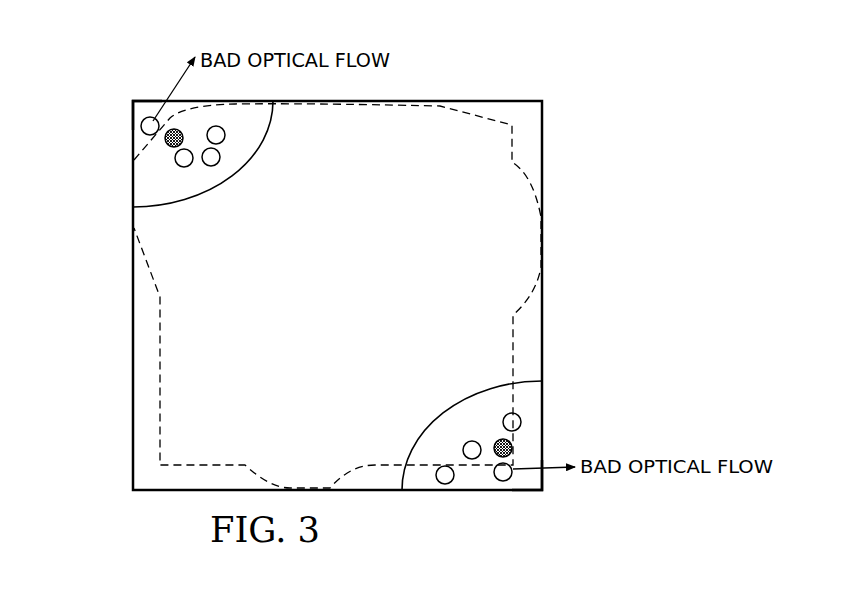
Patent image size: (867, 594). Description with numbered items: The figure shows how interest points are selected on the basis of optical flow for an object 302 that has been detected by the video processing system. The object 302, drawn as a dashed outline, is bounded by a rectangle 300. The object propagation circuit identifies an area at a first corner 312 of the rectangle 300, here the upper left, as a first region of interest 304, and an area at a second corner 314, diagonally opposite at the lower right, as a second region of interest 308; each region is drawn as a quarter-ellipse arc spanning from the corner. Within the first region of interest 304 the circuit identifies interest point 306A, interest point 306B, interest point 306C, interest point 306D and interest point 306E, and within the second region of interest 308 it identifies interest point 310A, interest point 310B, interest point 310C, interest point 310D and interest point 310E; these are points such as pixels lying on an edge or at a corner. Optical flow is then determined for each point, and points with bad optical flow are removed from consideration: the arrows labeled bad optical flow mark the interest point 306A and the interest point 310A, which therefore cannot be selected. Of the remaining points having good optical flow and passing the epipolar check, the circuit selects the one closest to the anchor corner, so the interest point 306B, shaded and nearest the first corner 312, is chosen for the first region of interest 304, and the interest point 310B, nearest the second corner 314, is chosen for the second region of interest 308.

The rectangle 300 is at (131, 325).
The object 302 is at (513, 142).
The first region of interest 304 is at (198, 198).
The interest point 306A is at (140, 127).
The interest point 306B is at (167, 145).
The interest point 306C is at (180, 167).
The interest point 306D is at (220, 158).
The interest point 306E is at (225, 137).
The second region of interest 308 is at (500, 386).
The interest point 310A is at (503, 481).
The interest point 310B is at (497, 441).
The interest point 310C is at (439, 483).
The interest point 310D is at (462, 450).
The interest point 310E is at (522, 422).
The first corner 312 is at (132, 99).
The second corner 314 is at (546, 490).